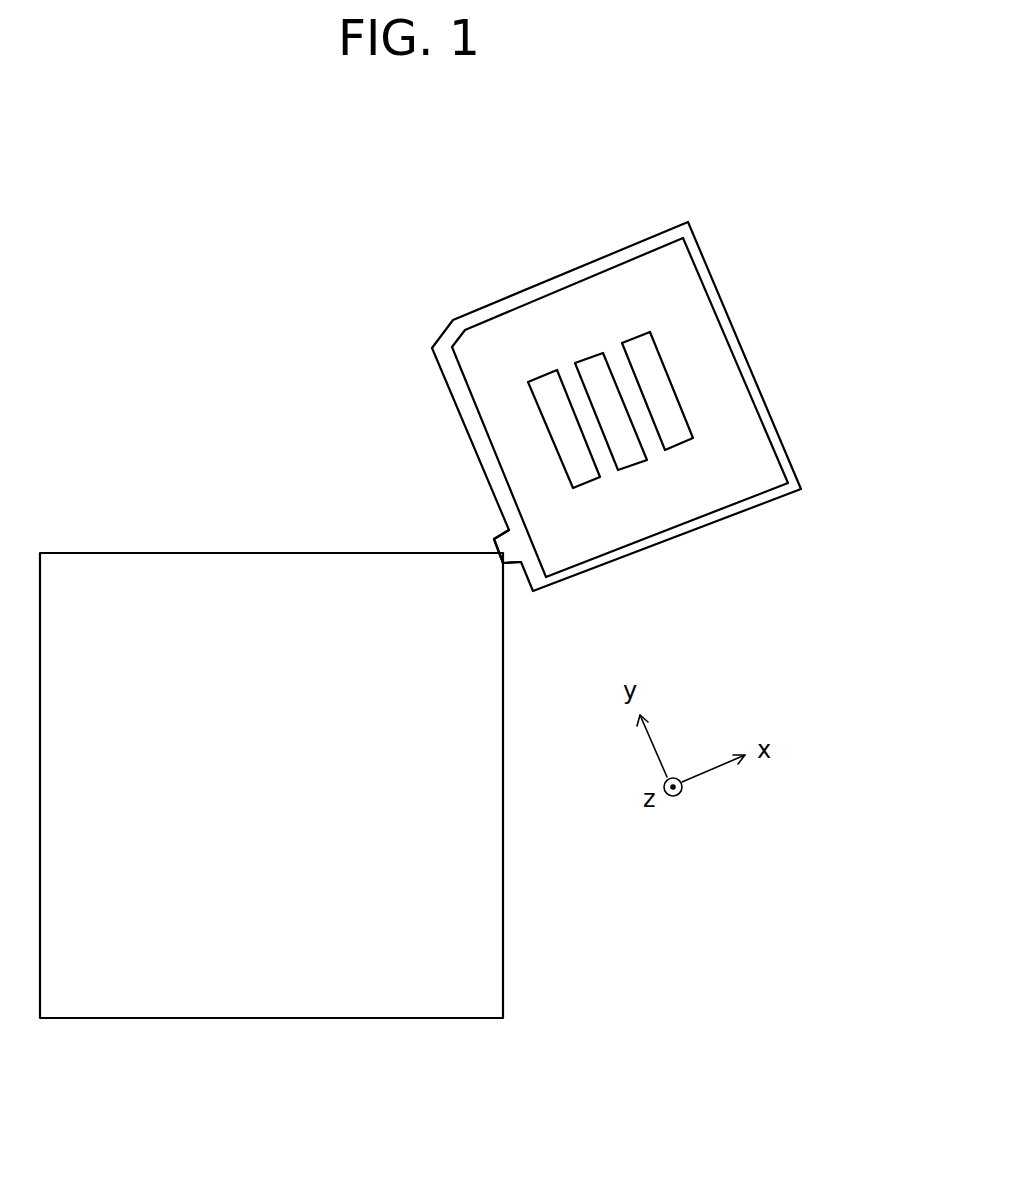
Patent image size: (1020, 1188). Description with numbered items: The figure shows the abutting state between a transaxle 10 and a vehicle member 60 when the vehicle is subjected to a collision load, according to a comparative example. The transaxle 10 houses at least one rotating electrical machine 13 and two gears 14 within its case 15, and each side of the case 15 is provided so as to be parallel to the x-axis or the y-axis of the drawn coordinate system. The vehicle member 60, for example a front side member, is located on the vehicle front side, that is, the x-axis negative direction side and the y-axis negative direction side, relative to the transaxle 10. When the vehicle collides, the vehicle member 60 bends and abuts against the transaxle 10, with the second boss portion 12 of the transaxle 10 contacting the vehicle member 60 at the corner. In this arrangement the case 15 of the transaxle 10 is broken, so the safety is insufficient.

The transaxle 10 is at (616, 383).
The second boss portion 12 is at (497, 532).
The rotating electrical machine 13 is at (638, 467).
The gear 14 is at (589, 482).
The case 15 is at (723, 520).
The vehicle member 60 is at (503, 784).